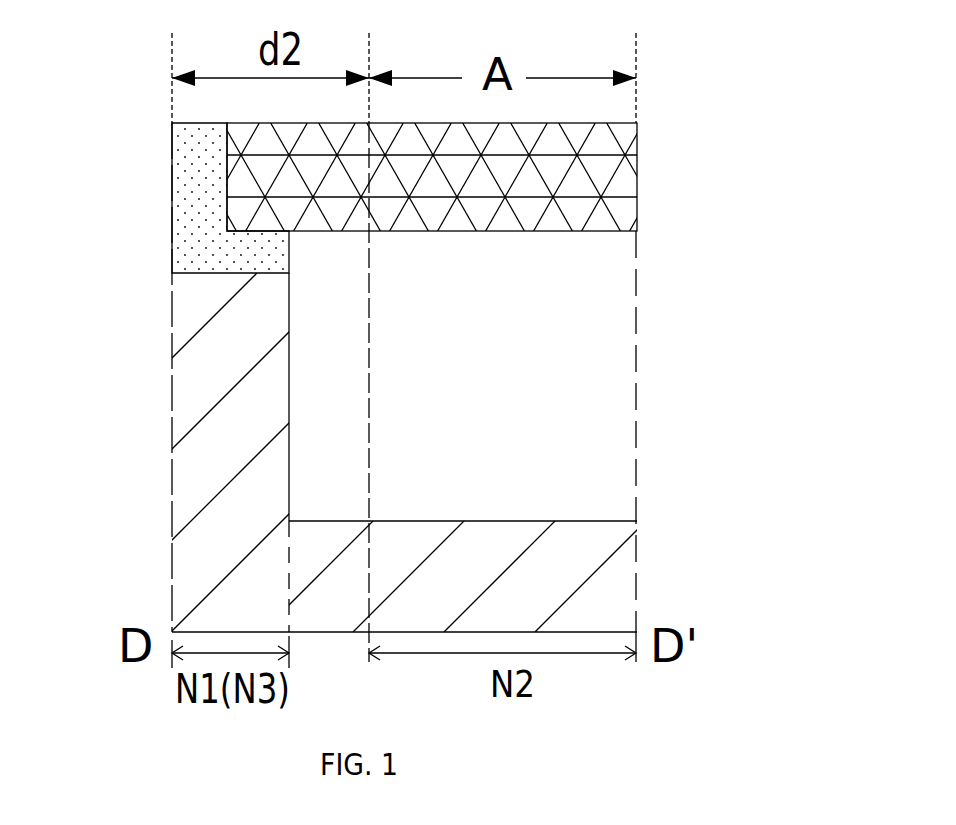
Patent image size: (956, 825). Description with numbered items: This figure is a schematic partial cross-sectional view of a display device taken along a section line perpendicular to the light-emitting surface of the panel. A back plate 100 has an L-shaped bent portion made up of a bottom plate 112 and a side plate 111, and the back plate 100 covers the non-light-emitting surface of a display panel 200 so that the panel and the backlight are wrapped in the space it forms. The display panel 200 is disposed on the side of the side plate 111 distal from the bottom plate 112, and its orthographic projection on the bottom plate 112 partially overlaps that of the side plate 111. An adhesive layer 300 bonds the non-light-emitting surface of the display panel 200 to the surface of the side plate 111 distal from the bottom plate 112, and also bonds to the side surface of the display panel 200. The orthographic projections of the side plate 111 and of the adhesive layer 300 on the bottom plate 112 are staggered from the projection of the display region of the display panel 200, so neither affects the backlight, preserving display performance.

The back plate 100 is at (447, 377).
The side plate 111 is at (265, 377).
The bottom plate 112 is at (578, 452).
The display panel 200 is at (421, 214).
The adhesive layer 300 is at (171, 203).